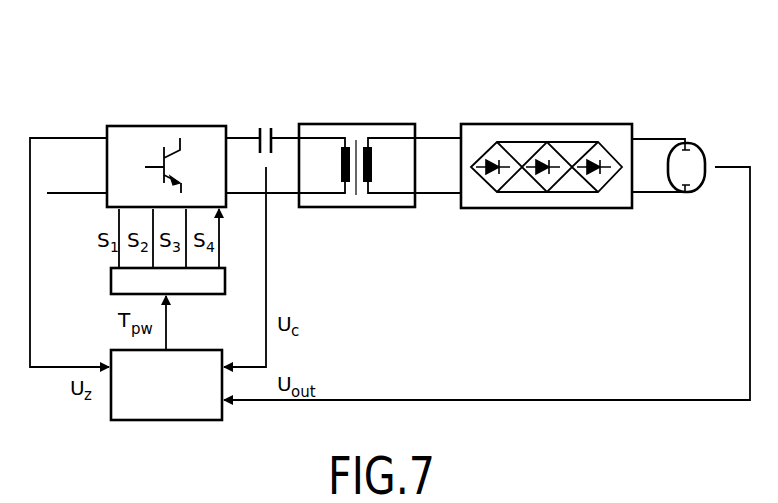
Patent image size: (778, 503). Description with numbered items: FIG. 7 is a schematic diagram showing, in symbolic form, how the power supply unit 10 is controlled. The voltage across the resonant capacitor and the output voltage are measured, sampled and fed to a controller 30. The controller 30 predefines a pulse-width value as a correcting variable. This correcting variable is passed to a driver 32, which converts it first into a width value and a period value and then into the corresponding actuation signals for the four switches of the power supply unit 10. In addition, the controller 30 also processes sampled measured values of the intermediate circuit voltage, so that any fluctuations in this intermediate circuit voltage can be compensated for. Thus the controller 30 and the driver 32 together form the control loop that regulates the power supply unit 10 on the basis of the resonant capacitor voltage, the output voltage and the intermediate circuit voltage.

The power supply unit 10 is at (165, 85).
The controller 30 is at (166, 358).
The driver 32 is at (111, 283).